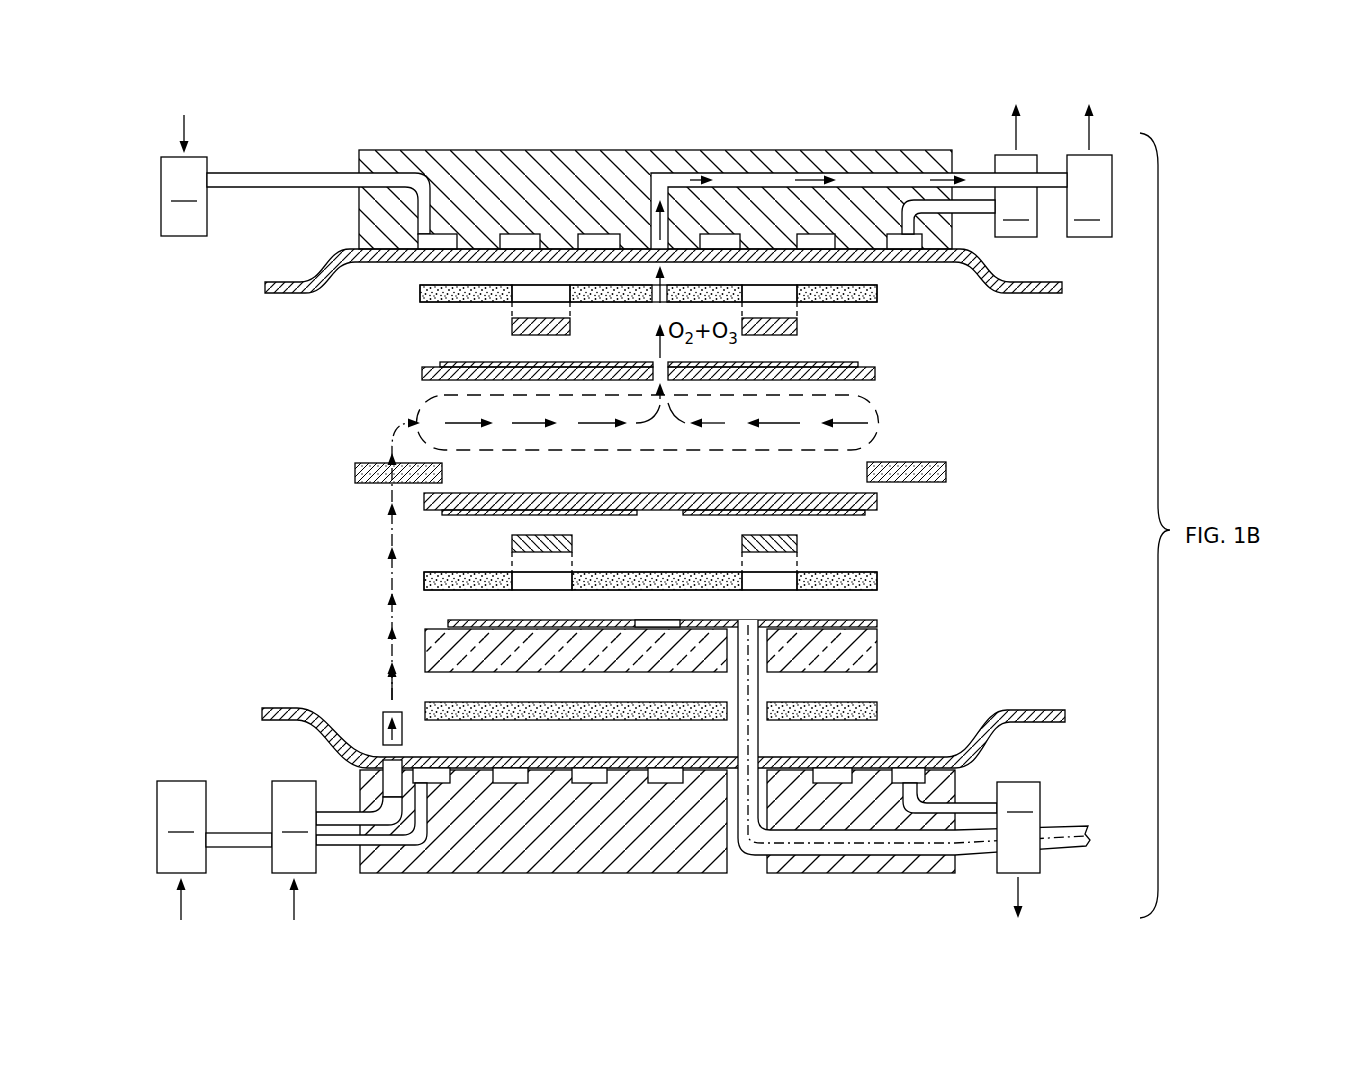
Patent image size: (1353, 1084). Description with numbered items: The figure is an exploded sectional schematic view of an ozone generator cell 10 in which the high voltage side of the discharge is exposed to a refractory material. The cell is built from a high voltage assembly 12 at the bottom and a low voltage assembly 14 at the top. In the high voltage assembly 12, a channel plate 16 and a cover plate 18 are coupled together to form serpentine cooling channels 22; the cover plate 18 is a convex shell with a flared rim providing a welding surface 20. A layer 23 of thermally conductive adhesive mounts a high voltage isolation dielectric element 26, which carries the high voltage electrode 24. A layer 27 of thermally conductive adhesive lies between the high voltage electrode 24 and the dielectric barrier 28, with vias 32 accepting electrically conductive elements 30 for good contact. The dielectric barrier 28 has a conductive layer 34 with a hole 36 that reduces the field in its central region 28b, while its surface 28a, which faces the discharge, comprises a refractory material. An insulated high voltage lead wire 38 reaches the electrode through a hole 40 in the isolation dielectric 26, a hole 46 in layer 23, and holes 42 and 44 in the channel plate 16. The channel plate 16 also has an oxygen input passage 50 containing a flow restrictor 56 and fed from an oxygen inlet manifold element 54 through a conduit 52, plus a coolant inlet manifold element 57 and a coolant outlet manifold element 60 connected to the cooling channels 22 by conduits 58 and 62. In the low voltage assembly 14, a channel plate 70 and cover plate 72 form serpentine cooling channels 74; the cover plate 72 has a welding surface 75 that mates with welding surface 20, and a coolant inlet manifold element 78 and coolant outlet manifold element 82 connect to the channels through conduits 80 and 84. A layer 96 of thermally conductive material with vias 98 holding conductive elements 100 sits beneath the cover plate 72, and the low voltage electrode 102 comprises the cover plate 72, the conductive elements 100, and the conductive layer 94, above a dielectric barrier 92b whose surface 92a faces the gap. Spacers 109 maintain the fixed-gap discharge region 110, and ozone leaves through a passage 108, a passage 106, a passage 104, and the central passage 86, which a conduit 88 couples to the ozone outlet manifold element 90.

The ozone generator cell 10 is at (842, 90).
The high voltage assembly 12 is at (395, 915).
The low voltage assembly 14 is at (355, 104).
The channel plate 16 is at (545, 873).
The cover plate 18 is at (262, 713).
The welding surface 20 is at (282, 708).
The serpentine cooling channels 22 is at (590, 775).
The layer of thermally conductive adhesive 23 is at (877, 710).
The high voltage electrode 24 is at (877, 623).
The high voltage isolation dielectric element 26 is at (877, 650).
The layer of thermally conductive adhesive 27 is at (877, 580).
The dielectric barrier 28 is at (877, 502).
The surface 28a is at (555, 493).
The central region 28b is at (637, 493).
The electrically conductive elements 30 is at (572, 543).
The vias 32 is at (516, 582).
The conductive layer 34 is at (448, 515).
The hole 36 is at (665, 515).
The insulated high voltage lead wire 38 is at (760, 740).
The hole 40 is at (762, 672).
The hole 42 is at (735, 873).
The hole 44 is at (780, 873).
The hole 46 is at (738, 697).
The oxygen input passage 50 is at (385, 765).
The conduit 52 is at (342, 810).
The oxygen inlet manifold element 54 is at (294, 850).
The flow restrictor 56 is at (383, 722).
The coolant inlet manifold element 57 is at (214, 850).
The conduit 58 is at (340, 850).
The coolant outlet manifold element 60 is at (1018, 850).
The conduit 62 is at (975, 800).
The channel plate 70 is at (482, 150).
The cover plate 72 is at (265, 287).
The serpentine cooling channels 74 is at (516, 234).
The welding surface 75 is at (288, 295).
The coolant inlet manifold element 78 is at (184, 175).
The conduit 80 is at (300, 172).
The coolant outlet manifold element 82 is at (1016, 170).
The conduit 84 is at (966, 225).
The centrally located passage 86 is at (642, 200).
The conduit 88 is at (978, 178).
The ozone outlet manifold element 90 is at (1089, 170).
The surface 92a is at (762, 380).
The dielectric barrier 92b is at (875, 372).
The conductive layer 94 is at (858, 363).
The layer of thermally conductive material 96 is at (877, 292).
The vias 98 is at (515, 290).
The electrically conductive elements 100 is at (512, 330).
The low voltage electrode 102 is at (395, 325).
The passage 104 is at (655, 300).
The passage 106 is at (655, 366).
The passage 108 is at (665, 378).
The spacers 109 is at (355, 475).
The discharge region 110 is at (890, 406).